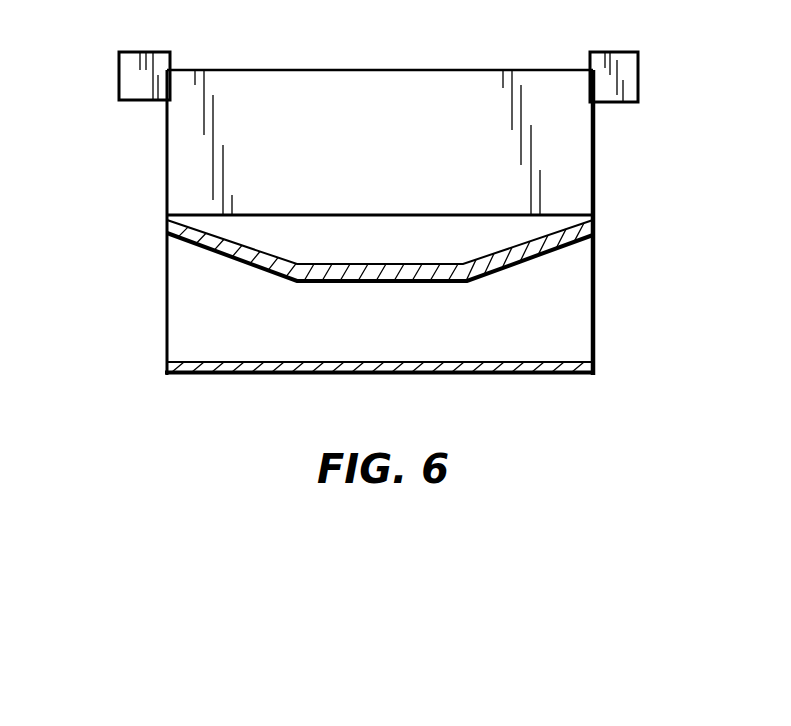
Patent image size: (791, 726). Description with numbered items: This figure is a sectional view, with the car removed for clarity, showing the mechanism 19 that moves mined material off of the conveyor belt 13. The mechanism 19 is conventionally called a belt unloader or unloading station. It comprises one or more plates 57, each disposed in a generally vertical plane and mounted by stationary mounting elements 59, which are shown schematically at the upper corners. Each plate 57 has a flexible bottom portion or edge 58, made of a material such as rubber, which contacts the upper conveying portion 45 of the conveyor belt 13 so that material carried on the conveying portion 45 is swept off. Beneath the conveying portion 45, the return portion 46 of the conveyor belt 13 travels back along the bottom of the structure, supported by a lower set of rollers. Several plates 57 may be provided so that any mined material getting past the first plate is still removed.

The conveyor belt 13 is at (597, 252).
The mechanism 19 is at (146, 299).
The conveying portion 45 is at (595, 218).
The return portion 46 is at (328, 374).
The plate 57 is at (270, 86).
The flexible bottom portion 58 is at (235, 227).
The stationary mounting elements 59 is at (128, 76).